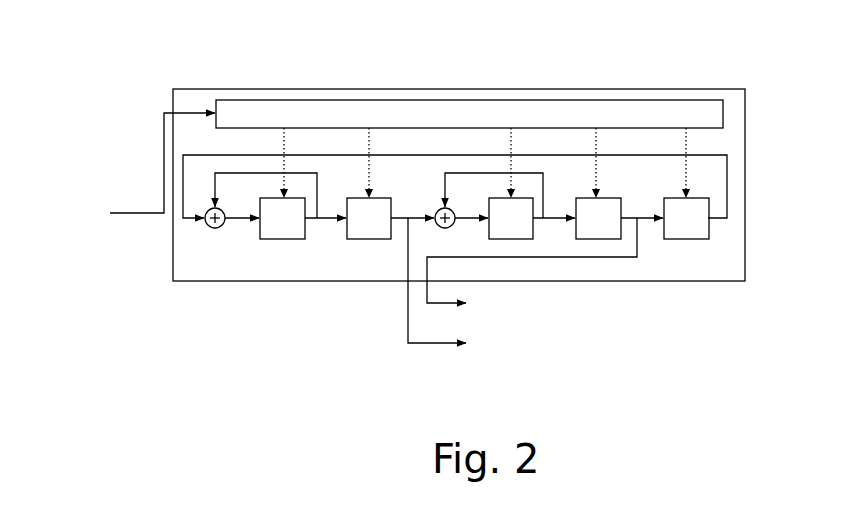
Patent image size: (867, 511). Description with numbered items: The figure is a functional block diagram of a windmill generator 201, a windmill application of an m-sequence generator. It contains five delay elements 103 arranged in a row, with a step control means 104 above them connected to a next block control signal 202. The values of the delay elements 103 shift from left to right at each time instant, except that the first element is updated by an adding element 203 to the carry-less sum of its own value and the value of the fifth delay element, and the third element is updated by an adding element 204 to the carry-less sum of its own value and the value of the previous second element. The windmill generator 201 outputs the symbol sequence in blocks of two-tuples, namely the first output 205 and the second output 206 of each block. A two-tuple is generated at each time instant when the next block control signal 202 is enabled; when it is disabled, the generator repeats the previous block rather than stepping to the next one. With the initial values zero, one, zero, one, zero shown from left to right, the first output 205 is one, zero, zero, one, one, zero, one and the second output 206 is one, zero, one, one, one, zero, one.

The delay elements 103 is at (683, 242).
The step control means 104 is at (298, 96).
The windmill generator 201 is at (258, 348).
The next block control signal 202 is at (118, 212).
The adding element 203 is at (209, 226).
The adding element 204 is at (437, 230).
The output Z2t 205 is at (440, 347).
The output Z2t+1 206 is at (458, 308).